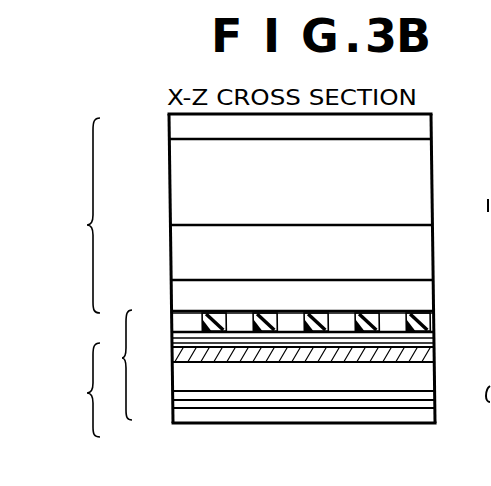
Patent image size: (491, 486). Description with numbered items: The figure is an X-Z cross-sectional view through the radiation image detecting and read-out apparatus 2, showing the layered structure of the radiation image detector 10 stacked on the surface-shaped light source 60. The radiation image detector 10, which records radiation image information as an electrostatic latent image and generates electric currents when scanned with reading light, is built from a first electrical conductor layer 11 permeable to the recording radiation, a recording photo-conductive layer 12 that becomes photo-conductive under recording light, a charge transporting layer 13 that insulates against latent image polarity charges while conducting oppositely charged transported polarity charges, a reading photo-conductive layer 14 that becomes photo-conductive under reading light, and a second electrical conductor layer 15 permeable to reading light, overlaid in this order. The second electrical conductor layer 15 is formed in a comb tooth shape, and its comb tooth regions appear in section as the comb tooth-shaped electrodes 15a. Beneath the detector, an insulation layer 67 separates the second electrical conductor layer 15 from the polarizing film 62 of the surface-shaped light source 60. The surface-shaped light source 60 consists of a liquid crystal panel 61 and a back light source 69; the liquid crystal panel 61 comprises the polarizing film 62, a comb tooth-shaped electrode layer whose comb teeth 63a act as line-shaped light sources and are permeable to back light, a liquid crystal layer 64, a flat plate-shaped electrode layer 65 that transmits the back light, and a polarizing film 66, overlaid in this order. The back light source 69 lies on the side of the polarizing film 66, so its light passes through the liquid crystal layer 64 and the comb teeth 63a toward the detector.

The radiation image detecting and read-out apparatus 2 is at (438, 107).
The radiation image detector 10 is at (78, 215).
The first electrical conductor layer 11 is at (170, 131).
The recording photo-conductive layer 12 is at (172, 182).
The charge transporting layer 13 is at (173, 252).
The reading photo-conductive layer 14 is at (173, 290).
The second electrical conductor layer 15 is at (173, 320).
The comb tooth-shaped electrode 15a is at (434, 322).
The surface-shaped light source 60 is at (78, 390).
The liquid crystal panel 61 is at (115, 365).
The polarizing film 62 is at (174, 340).
The comb tooth 63a is at (174, 354).
The liquid crystal layer 64 is at (174, 376).
The electrode layer 65 is at (174, 396).
The polarizing film 66 is at (174, 405).
The insulation layer 67 is at (174, 324).
The back light source 69 is at (175, 414).